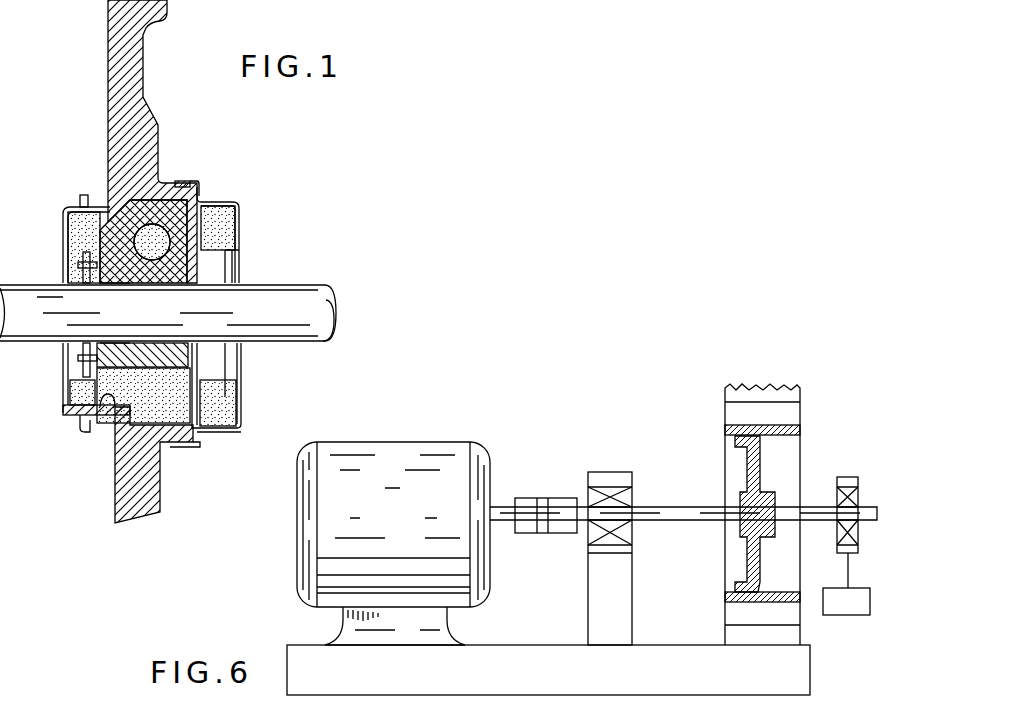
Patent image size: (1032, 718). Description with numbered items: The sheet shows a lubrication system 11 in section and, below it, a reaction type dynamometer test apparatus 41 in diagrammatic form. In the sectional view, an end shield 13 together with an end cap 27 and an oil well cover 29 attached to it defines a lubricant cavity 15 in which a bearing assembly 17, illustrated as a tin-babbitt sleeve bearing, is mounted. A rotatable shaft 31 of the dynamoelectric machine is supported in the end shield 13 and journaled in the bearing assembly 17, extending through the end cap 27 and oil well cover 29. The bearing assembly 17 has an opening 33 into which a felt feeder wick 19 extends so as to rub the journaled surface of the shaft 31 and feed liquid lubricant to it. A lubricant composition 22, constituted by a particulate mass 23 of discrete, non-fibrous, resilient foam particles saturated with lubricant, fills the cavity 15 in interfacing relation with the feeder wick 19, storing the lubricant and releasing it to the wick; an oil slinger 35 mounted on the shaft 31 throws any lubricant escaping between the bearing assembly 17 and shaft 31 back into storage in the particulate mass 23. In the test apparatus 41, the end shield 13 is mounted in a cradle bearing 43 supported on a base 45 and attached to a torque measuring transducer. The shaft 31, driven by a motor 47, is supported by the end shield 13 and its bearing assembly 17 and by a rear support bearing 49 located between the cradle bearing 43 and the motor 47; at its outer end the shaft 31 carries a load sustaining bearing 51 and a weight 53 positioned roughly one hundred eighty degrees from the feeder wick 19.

In FIG. 1, the lubrication system 11 is at (171, 163).
In FIG. 1, the end shield 13 is at (131, 57).
In FIG. 6, the end shield 13 is at (762, 470).
In FIG. 1, the lubricant cavity 15 is at (105, 423).
In FIG. 1, the bearing assembly 17 is at (164, 283).
In FIG. 1, the feeder wick 19 is at (188, 181).
In FIG. 1, the lubricant composition 22 is at (216, 227).
In FIG. 1, the particulate mass 23 is at (231, 202).
In FIG. 1, the end cap 27 is at (64, 398).
In FIG. 1, the oil well cover 29 is at (242, 405).
In FIG. 1, the shaft 31 is at (295, 290).
In FIG. 6, the shaft 31 is at (678, 512).
In FIG. 1, the opening 33 is at (130, 283).
In FIG. 1, the oil slinger 35 is at (64, 270).
In FIG. 6, the test apparatus 41 is at (604, 460).
In FIG. 6, the cradle bearing 43 is at (795, 432).
In FIG. 6, the base 45 is at (564, 679).
In FIG. 6, the motor 47 is at (410, 533).
In FIG. 6, the rear support bearing 49 is at (532, 497).
In FIG. 6, the load sustaining bearing 51 is at (851, 477).
In FIG. 6, the weight 53 is at (850, 616).